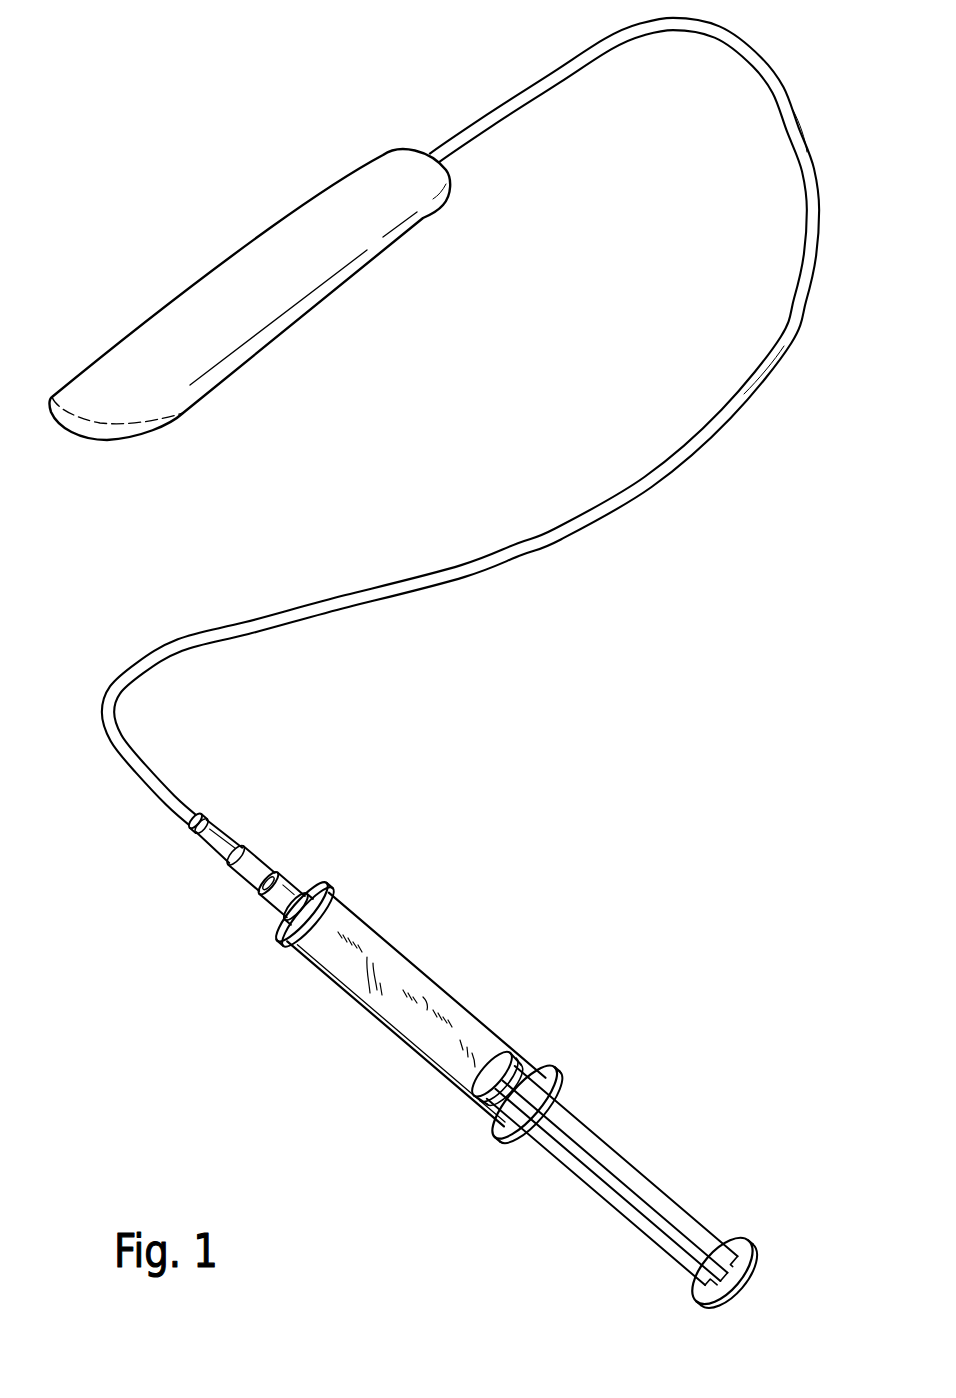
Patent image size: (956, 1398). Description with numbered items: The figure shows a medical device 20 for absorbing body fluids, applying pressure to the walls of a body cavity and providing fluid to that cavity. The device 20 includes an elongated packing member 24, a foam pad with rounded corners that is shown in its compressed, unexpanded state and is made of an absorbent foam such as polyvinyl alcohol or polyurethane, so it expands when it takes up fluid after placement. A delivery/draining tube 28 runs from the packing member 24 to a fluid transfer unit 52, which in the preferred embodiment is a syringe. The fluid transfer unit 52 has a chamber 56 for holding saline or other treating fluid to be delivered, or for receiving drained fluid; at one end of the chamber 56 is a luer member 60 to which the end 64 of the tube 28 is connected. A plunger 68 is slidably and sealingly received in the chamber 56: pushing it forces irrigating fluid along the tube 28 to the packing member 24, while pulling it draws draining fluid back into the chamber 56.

The medical device 20 is at (140, 169).
The packing member 24 is at (268, 226).
The delivery/draining tube 28 is at (767, 55).
The fluid transfer unit 52 is at (427, 955).
The chamber 56 is at (370, 942).
The luer hub 60 is at (303, 887).
The end of the delivery/draining tube 64 is at (189, 815).
The plunger 68 is at (610, 1153).